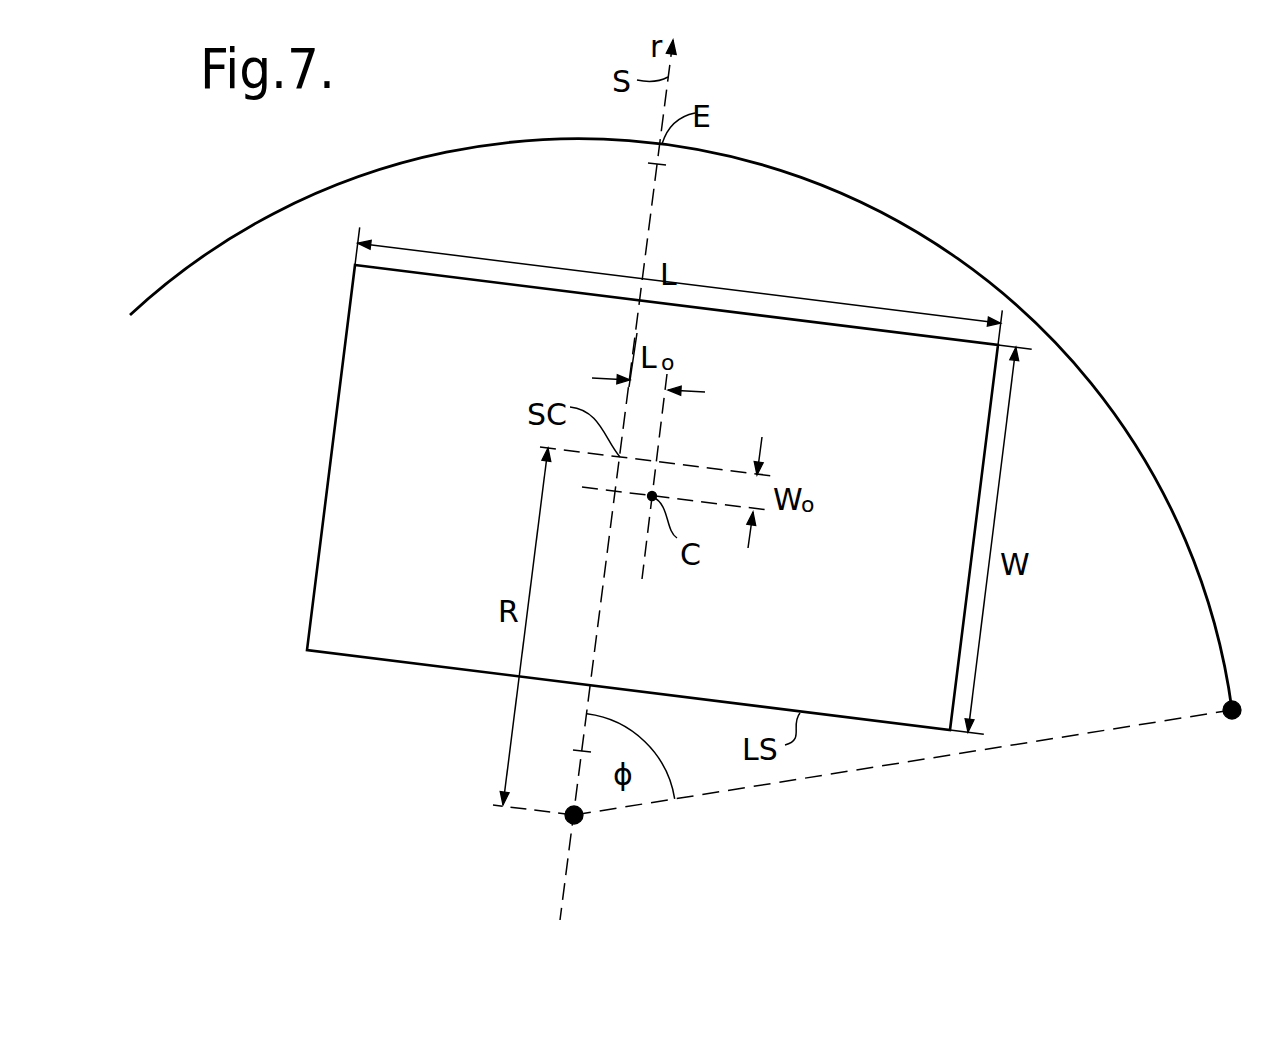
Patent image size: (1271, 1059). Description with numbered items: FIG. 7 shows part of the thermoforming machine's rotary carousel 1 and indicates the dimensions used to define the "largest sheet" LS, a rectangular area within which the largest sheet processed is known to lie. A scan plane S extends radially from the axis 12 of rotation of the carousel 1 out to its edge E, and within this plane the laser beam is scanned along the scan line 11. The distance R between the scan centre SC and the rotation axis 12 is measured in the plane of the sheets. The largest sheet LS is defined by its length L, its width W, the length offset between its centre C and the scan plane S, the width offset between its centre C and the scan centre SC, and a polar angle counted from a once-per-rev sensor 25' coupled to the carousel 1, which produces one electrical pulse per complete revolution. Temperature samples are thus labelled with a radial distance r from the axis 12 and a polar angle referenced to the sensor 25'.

The carousel 1 is at (852, 230).
The scan line 11 is at (650, 203).
The axis of rotation 12 is at (578, 819).
The once-per-rev sensor 25' is at (1190, 689).